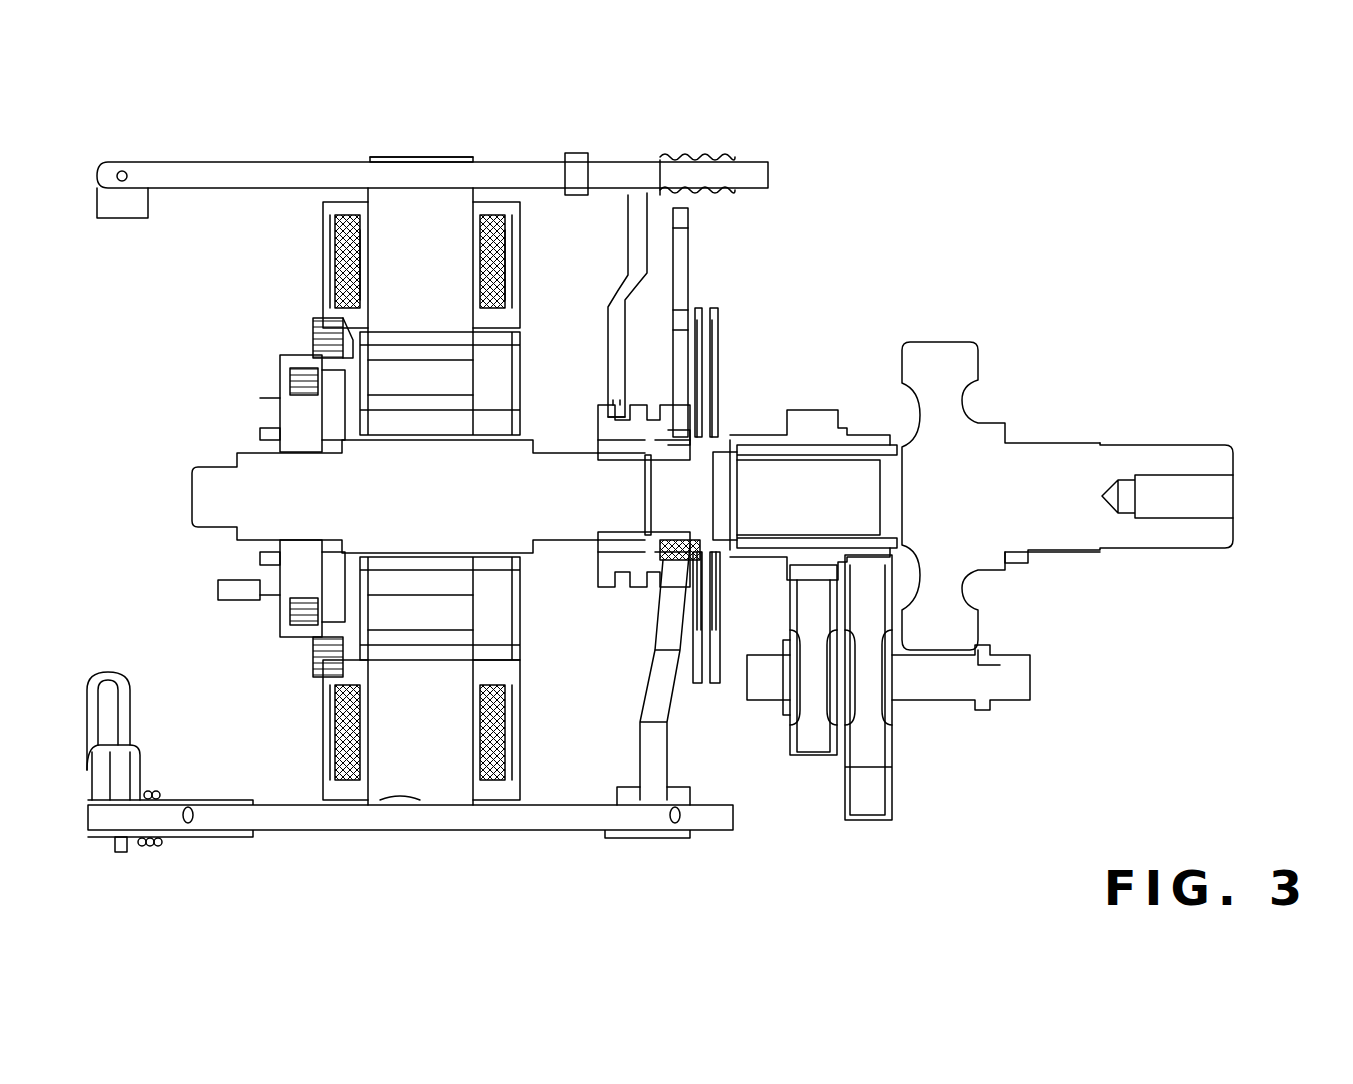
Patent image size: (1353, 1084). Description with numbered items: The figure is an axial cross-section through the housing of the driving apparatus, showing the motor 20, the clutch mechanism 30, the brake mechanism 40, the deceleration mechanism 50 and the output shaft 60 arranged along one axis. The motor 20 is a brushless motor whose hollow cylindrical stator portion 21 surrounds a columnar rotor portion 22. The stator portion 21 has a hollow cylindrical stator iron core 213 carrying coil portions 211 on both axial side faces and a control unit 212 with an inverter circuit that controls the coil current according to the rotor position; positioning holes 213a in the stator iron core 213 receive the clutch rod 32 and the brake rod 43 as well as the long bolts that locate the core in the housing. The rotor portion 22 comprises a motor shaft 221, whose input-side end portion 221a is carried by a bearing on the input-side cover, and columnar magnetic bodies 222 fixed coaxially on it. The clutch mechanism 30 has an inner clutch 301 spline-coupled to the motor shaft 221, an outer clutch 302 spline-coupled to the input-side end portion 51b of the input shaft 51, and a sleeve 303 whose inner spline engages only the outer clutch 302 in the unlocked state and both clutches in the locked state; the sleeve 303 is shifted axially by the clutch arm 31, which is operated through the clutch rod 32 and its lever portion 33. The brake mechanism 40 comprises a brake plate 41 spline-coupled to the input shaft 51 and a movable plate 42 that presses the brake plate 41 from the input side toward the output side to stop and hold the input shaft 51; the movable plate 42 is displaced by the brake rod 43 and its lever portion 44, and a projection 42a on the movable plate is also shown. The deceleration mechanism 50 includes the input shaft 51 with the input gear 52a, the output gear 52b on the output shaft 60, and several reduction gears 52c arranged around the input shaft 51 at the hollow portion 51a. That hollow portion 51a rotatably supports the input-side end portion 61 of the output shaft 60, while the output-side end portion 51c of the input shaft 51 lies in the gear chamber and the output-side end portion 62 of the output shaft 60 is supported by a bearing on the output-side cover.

The motor 20 is at (431, 207).
The stator portion 21 is at (188, 262).
The coil portions 211 is at (335, 255).
The control unit 212 is at (280, 385).
The stator iron core 213 is at (330, 300).
The positioning holes 213a is at (390, 160).
The rotor portion 22 is at (600, 664).
The motor shaft 221 is at (555, 530).
The input-side end portion of the motor shaft 221a is at (192, 497).
The magnetic bodies 222 is at (460, 625).
The clutch mechanism 30 is at (538, 152).
The clutch arm 31 is at (628, 262).
The clutch rod 32 is at (215, 162).
The lever portion 33 is at (120, 218).
The inner clutch 301 is at (598, 438).
The outer clutch 302 is at (645, 470).
The sleeve 303 is at (600, 410).
The brake mechanism 40 is at (556, 830).
The brake plate 41 is at (720, 355).
The movable plate 42 is at (690, 218).
The armature projection 42a is at (673, 430).
The brake rod 43 is at (290, 820).
The lever portion 44 is at (115, 672).
The deceleration mechanism 50 is at (980, 300).
The input shaft 51 is at (700, 545).
The hollow portion 51a is at (730, 530).
The input-side end portion of the input shaft 51b is at (670, 700).
The output-side end portion of the input shaft 51c is at (882, 440).
The input gear 52a is at (800, 410).
The output gear 52b is at (930, 342).
The reduction gears 52c is at (892, 745).
The output shaft 60 is at (1238, 493).
The input-side end portion of the output shaft 61 is at (858, 470).
The output-side end portion of the output shaft 62 is at (1190, 548).